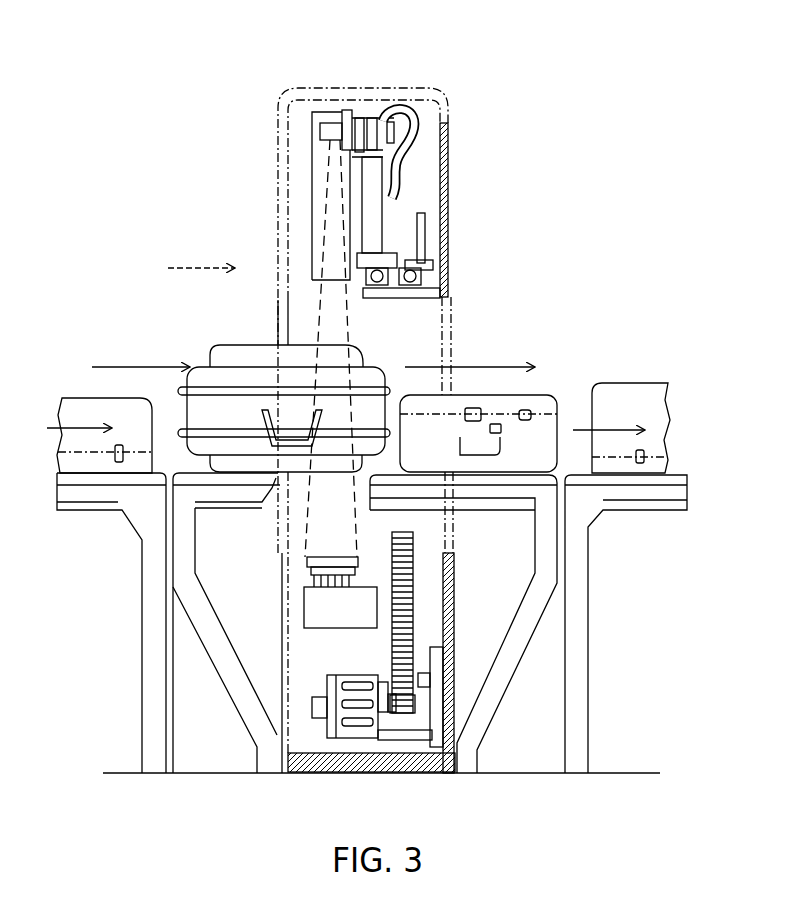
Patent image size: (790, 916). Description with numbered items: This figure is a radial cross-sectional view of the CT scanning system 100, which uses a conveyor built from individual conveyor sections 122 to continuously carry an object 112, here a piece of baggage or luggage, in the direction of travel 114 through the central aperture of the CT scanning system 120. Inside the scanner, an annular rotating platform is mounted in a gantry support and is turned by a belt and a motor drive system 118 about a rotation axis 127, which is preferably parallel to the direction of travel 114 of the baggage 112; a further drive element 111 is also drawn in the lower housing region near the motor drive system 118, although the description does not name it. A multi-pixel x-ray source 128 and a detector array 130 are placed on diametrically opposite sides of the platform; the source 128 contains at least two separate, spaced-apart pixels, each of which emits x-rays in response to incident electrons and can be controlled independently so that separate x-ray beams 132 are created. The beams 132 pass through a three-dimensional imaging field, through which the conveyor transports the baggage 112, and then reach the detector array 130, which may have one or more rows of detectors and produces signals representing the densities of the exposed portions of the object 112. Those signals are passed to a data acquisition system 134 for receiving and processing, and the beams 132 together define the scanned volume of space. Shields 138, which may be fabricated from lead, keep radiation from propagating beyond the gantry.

The CT scanning system 100 is at (584, 817).
The rack gear 111 is at (413, 615).
The object 112 is at (248, 343).
The direction of travel 114 is at (198, 268).
The motor drive system 118 is at (373, 741).
The CT scanning system 120 is at (332, 87).
The conveyor sections 122 is at (590, 612).
The rotation axis 127 is at (133, 367).
The multi-pixel x-ray source 128 is at (367, 120).
The detector array 130 is at (322, 556).
The x-ray beams 132 is at (346, 335).
The data acquisition system 134 is at (310, 630).
The shields 138 is at (309, 572).